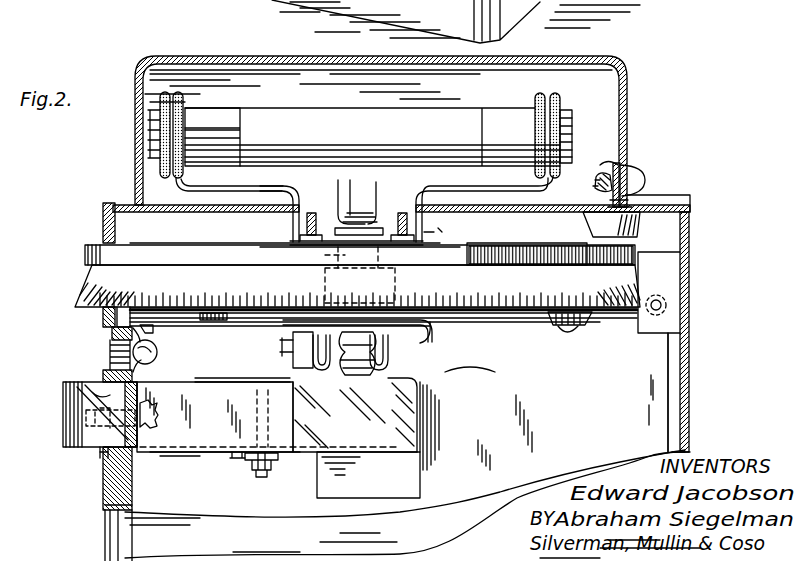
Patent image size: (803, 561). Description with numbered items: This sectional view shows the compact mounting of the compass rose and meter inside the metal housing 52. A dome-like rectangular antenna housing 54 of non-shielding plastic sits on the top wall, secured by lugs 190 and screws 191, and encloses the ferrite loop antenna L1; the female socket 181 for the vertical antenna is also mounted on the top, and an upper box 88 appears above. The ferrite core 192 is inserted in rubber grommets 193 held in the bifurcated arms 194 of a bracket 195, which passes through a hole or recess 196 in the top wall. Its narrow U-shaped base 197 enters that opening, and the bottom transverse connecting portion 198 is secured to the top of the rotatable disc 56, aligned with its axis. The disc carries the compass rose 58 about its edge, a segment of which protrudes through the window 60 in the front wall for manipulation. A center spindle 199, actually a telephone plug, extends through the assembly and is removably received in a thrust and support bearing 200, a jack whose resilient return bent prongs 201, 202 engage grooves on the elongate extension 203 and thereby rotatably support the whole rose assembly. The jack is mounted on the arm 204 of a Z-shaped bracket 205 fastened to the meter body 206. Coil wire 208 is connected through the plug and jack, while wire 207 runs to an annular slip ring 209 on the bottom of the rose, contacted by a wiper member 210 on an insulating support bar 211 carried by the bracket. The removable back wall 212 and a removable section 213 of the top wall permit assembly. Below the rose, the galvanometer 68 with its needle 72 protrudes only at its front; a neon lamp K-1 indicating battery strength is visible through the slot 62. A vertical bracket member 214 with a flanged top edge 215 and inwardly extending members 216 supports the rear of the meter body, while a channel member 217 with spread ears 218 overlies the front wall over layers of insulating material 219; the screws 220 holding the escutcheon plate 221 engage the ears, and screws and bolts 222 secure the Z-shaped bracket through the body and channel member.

The upper housing box 88 is at (456, 21).
The antenna housing 54 is at (606, 58).
The ferrite loop antenna L1 is at (450, 104).
The ferrite core 192 is at (190, 116).
The rubber grommets 193 is at (184, 98).
The bifurcated arms 194 is at (165, 185).
The wire 207 is at (270, 188).
The wire 208 is at (470, 180).
The bottom transverse connecting portion 198 is at (405, 242).
The U-shaped base 197 is at (300, 232).
The hole or recess 196 is at (434, 230).
The bracket 195 is at (112, 208).
The screws 191 is at (637, 176).
The lugs 190 is at (626, 165).
The female socket 181 is at (690, 202).
The housing 52 is at (690, 240).
The removable section 213 is at (566, 212).
The rotatable disc 56 is at (205, 258).
The window 60 is at (100, 246).
The center spindle 199 is at (336, 273).
The compass rose 58 is at (480, 277).
The thrust and support bearing 200 is at (456, 322).
The arm 204 is at (532, 337).
The wiper member 210 is at (475, 342).
The elongate extension 203 is at (420, 346).
The slot 62 is at (110, 345).
The galvanometer 68 is at (62, 395).
The needle 72 is at (66, 420).
The screws 220 is at (100, 457).
The escutcheon plate 221 is at (103, 462).
The insulating material 219 is at (108, 505).
The contact K-1 is at (158, 352).
The annular slip ring 209 is at (195, 330).
The Z-shaped bracket 205 is at (300, 338).
The insulating support bar 211 is at (286, 358).
The meter body 206 is at (268, 417).
The return bent prong 201 is at (332, 385).
The return bent prong 202 is at (383, 385).
The vertical bracket member 214 is at (420, 432).
The flanged top edge 215 is at (470, 378).
The spread ears 218 is at (178, 456).
The channel member 217 is at (222, 458).
The screws and bolts 222 is at (262, 470).
The inwardly extending members 216 is at (342, 495).
The back wall 212 is at (696, 382).